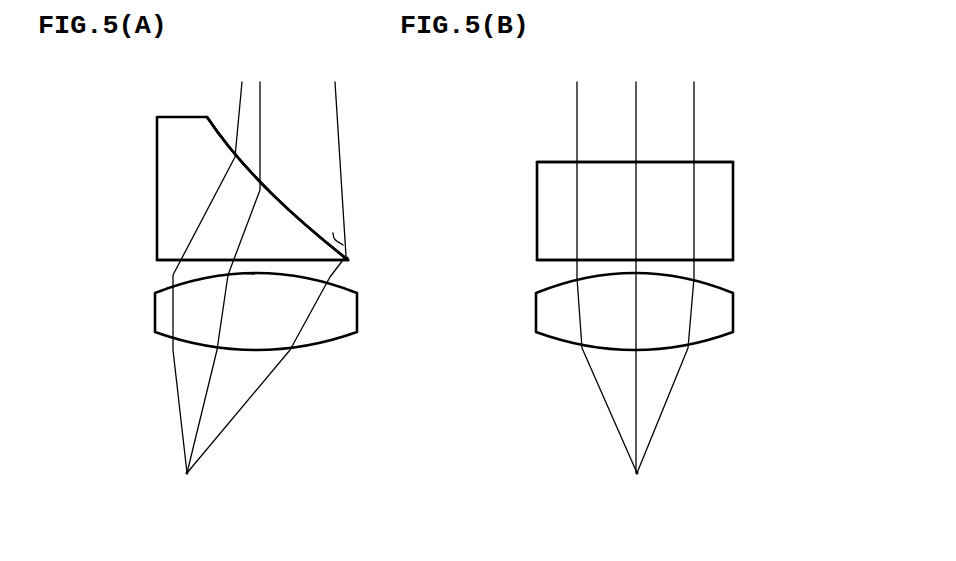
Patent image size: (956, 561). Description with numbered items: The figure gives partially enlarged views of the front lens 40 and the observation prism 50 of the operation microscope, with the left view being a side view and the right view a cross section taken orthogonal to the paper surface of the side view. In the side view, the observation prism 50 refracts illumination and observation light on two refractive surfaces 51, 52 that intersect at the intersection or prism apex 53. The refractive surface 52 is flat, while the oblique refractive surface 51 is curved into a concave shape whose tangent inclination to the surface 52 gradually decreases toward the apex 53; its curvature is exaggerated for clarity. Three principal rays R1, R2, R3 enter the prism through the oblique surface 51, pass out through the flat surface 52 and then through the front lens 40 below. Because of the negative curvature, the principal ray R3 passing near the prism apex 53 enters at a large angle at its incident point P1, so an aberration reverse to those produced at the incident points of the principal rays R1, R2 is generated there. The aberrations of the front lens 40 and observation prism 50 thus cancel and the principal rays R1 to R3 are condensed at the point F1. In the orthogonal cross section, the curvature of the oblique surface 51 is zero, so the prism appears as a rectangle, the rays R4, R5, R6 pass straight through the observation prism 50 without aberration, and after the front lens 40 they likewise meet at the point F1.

In FIG. 5A, the front lens 40 is at (155, 316).
In FIG. 5B, the front lens 40 is at (733, 325).
In FIG. 5A, the observation prism 50 is at (157, 157).
In FIG. 5B, the observation prism 50 is at (733, 182).
In FIG. 5A, the refractive surface (oblique surface) 51 is at (297, 204).
In FIG. 5B, the refractive surface (oblique surface) 51 is at (722, 152).
In FIG. 5A, the refractive surface 52 is at (166, 266).
In FIG. 5B, the refractive surface 52 is at (727, 268).
In FIG. 5A, the intersection (prism apex) 53 is at (360, 271).
In FIG. 5A, the incident point P1 is at (357, 255).
In FIG. 5A, the principle ray R1 is at (237, 101).
In FIG. 5A, the principle ray R2 is at (261, 108).
In FIG. 5A, the principle ray R3 is at (340, 157).
In FIG. 5B, the light ray R4 is at (577, 137).
In FIG. 5B, the light ray R5 is at (636, 120).
In FIG. 5B, the light ray R6 is at (694, 128).
In FIG. 5A, the condensing point F1 is at (194, 480).
In FIG. 5B, the condensing point F1 is at (645, 480).